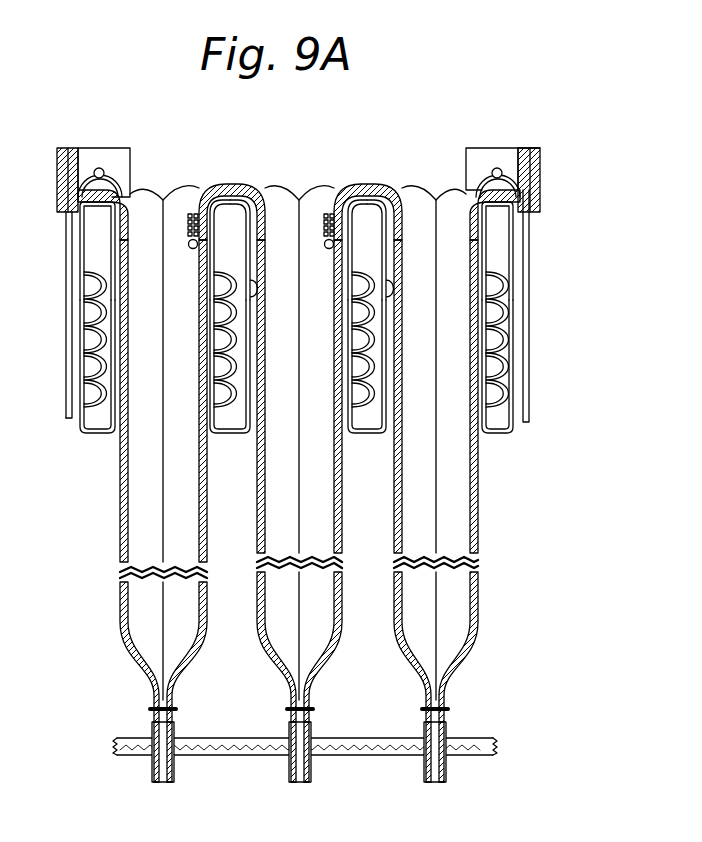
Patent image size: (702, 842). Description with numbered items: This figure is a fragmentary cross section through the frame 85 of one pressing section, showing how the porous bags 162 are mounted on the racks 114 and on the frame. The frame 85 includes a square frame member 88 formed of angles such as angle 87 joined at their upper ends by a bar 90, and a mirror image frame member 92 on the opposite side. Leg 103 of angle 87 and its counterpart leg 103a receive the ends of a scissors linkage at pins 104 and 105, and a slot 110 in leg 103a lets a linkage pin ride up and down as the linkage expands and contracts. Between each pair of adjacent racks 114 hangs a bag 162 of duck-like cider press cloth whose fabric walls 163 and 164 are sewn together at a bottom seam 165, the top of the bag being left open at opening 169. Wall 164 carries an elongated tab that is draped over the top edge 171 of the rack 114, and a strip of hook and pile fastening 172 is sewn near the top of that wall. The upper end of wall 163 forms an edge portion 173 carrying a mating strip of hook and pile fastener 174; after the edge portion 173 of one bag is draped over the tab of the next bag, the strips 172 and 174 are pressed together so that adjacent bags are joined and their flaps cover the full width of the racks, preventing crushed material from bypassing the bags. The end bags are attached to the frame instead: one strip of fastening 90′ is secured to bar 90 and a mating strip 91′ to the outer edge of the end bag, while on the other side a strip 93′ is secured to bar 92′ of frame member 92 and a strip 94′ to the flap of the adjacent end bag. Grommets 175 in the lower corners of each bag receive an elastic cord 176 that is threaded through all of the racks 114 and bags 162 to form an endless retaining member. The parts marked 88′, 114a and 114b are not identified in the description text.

The frame 85 is at (318, 162).
The angle 87 is at (66, 300).
The square frame member 88 is at (66, 410).
The support rod 88′ is at (531, 320).
The bar 90 is at (57, 196).
The strip of hook and pile fastening 90′ is at (67, 150).
The strip of hook and pile fastening 91′ is at (67, 148).
The frame member 92 is at (540, 210).
The bar 92′ is at (540, 194).
The strip of fastening material 93′ is at (531, 148).
The strip of fastening material 94′ is at (504, 148).
The leg of angle 103 is at (132, 157).
The leg of angle 103a is at (466, 152).
The pin 104 is at (99, 167).
The pin 105 is at (495, 167).
The slot 110 is at (254, 290).
The rack 114 is at (82, 433).
The helical coil upper portion 114a is at (86, 335).
The helical coil lower portion 114b is at (86, 378).
The porous bag 162 is at (120, 575).
The fabric wall 163 is at (120, 522).
The fabric wall 164 is at (199, 520).
The bottom seam 165 is at (150, 709).
The opening 169 is at (163, 198).
The top edge of rack 171 is at (231, 184).
The strip of hook and pile fastening 172 is at (209, 265).
The edge portion 173 is at (187, 228).
The strip of hook and pile fastener 174 is at (190, 249).
The grommets 175 is at (152, 760).
The elastic cord 176 is at (260, 738).